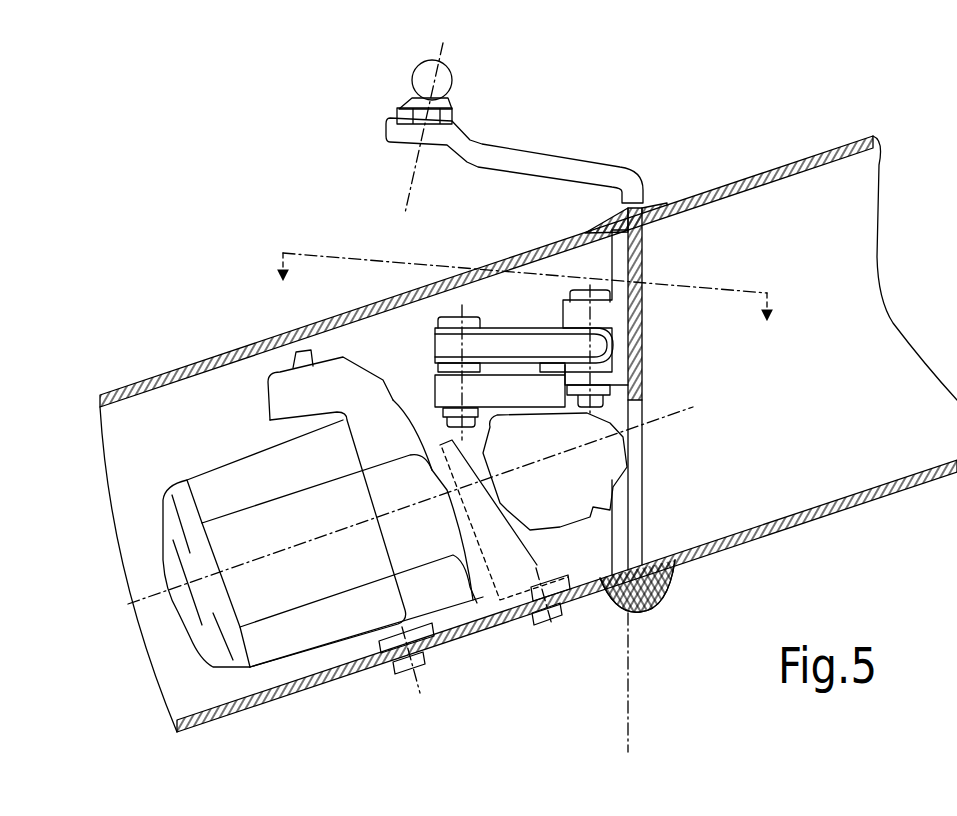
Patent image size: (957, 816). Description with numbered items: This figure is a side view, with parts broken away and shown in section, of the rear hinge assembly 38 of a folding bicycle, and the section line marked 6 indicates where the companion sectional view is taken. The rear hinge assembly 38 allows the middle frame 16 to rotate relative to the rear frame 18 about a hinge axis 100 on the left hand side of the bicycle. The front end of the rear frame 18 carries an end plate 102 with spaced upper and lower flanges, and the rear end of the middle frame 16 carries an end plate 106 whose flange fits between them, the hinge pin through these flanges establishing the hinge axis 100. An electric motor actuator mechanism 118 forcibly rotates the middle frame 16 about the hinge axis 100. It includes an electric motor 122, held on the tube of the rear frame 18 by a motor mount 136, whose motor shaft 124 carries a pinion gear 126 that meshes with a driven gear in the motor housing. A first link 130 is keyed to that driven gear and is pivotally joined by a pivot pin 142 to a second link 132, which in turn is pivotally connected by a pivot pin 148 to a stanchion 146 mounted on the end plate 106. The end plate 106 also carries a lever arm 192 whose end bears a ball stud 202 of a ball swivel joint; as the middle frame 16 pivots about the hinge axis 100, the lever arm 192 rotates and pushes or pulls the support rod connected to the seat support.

The middle frame 16 is at (767, 177).
The rear frame 18 is at (177, 375).
The rear hinge assembly 38 is at (689, 124).
The hinge axis 100 is at (628, 680).
The end plate 102 is at (622, 260).
The end plate 106 is at (638, 283).
The electric motor actuator mechanism 118 is at (372, 248).
The electric motor 122 is at (247, 530).
The motor shaft 124 is at (515, 488).
The pinion gear 126 is at (640, 602).
The first link 130 is at (507, 387).
The second link 132 is at (487, 347).
The motor mount 136 is at (495, 553).
The pivot pin 142 is at (472, 318).
The stanchion 146 is at (608, 313).
The pivot pin 148 is at (587, 295).
The lever arm 192 is at (527, 158).
The ball stud 202 is at (442, 80).
The section line 6 is at (523, 307).